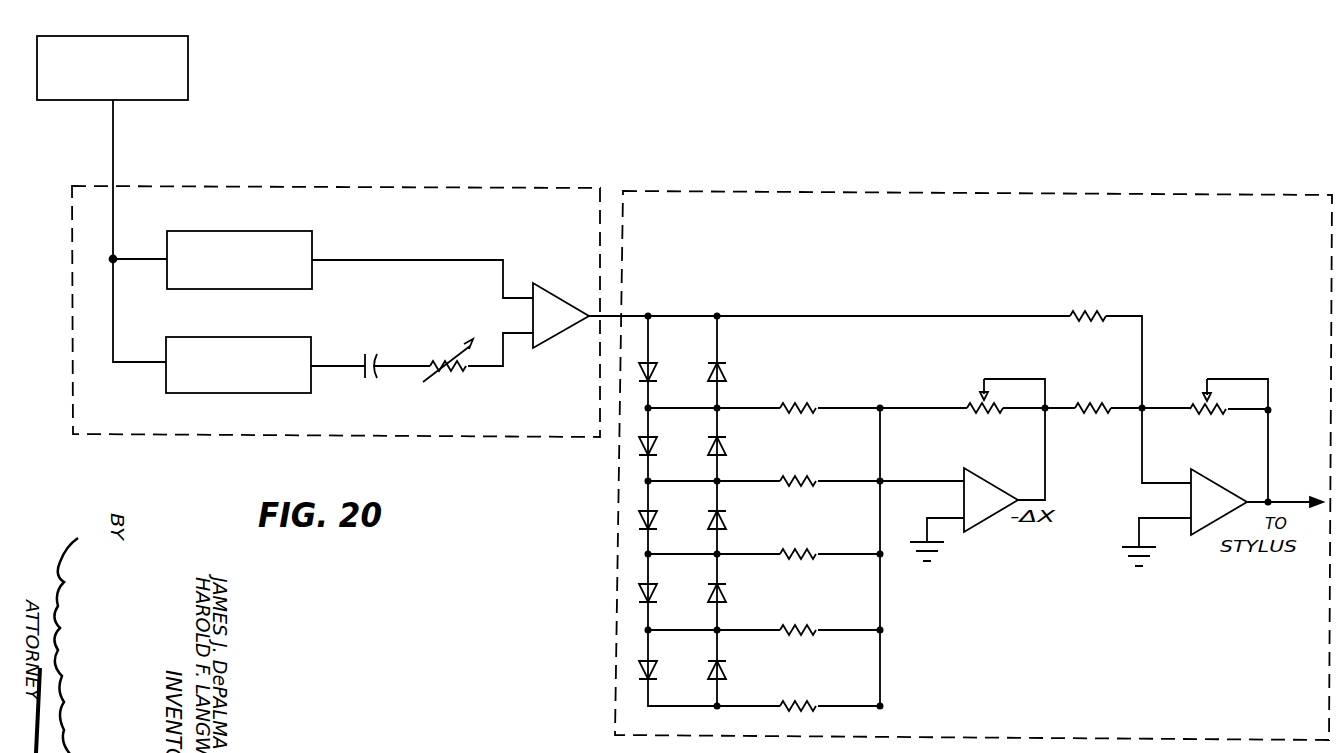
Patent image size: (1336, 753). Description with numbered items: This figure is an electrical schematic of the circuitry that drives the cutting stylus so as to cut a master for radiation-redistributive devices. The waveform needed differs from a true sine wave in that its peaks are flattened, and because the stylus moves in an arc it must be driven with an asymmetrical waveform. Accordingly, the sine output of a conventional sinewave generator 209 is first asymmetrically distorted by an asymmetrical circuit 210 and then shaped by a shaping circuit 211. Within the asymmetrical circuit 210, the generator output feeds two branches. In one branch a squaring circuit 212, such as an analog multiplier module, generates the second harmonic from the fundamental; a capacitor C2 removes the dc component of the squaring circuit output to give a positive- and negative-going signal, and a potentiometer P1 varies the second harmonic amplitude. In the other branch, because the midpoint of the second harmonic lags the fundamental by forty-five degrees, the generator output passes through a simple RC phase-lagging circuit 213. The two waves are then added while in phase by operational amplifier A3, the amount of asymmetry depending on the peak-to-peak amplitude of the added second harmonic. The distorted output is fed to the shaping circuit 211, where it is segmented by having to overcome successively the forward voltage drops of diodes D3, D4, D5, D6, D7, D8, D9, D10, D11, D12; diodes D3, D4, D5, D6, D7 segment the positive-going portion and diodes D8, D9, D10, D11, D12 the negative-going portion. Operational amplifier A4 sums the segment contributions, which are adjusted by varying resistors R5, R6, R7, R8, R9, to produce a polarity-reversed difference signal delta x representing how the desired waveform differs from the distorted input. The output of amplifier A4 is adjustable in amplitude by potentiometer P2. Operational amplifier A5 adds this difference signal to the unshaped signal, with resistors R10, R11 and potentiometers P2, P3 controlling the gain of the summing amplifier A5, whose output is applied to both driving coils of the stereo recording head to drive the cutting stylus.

The sinewave generator 209 is at (188, 73).
The asymmetrical circuit 210 is at (386, 186).
The shaping circuit 211 is at (951, 195).
The squaring circuit 212 is at (312, 348).
The RC phase-lagging circuit 213 is at (312, 241).
The capacitor C2 is at (368, 379).
The potentiometer P1 is at (448, 371).
The potentiometer P2 is at (1006, 411).
The potentiometer P3 is at (1229, 411).
The operational amplifier A3 is at (561, 315).
The operational amplifier A4 is at (991, 500).
The operational amplifier A5 is at (1219, 502).
The diode D3 is at (662, 373).
The diode D4 is at (662, 447).
The diode D5 is at (662, 521).
The diode D6 is at (661, 594).
The diode D7 is at (662, 670).
The diode D8 is at (732, 373).
The diode D9 is at (732, 447).
The diode D10 is at (735, 521).
The diode D11 is at (734, 594).
The diode D12 is at (736, 671).
The resistor R5 is at (798, 395).
The resistor R6 is at (798, 468).
The resistor R7 is at (799, 542).
The resistor R8 is at (799, 618).
The resistor R9 is at (799, 694).
The resistor R10 is at (1093, 305).
The resistor R11 is at (1093, 397).